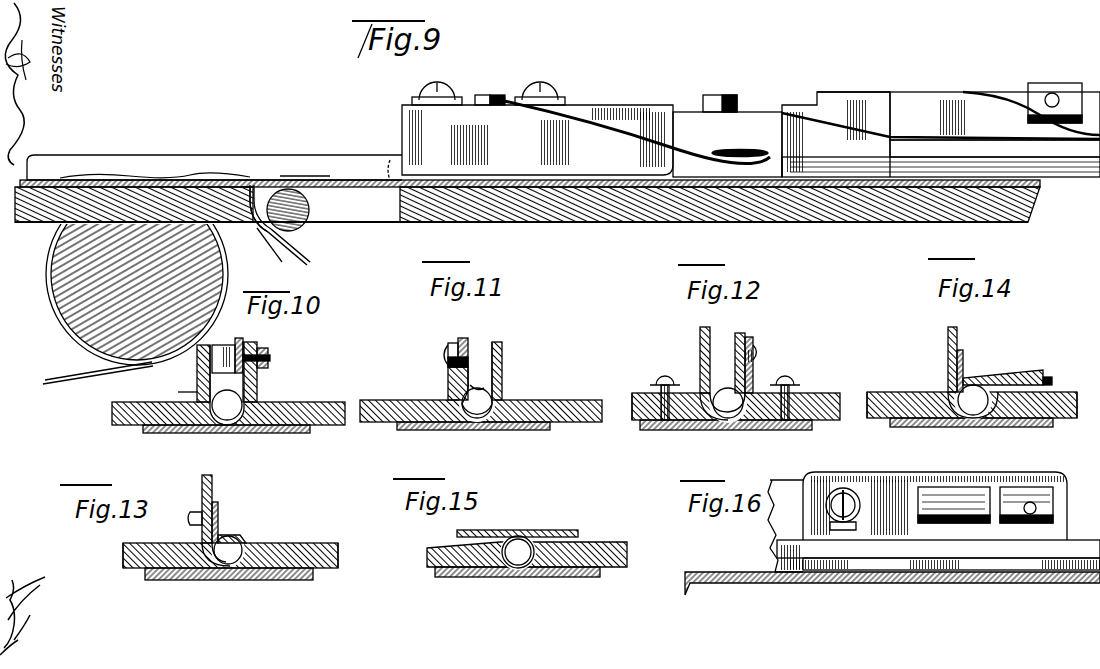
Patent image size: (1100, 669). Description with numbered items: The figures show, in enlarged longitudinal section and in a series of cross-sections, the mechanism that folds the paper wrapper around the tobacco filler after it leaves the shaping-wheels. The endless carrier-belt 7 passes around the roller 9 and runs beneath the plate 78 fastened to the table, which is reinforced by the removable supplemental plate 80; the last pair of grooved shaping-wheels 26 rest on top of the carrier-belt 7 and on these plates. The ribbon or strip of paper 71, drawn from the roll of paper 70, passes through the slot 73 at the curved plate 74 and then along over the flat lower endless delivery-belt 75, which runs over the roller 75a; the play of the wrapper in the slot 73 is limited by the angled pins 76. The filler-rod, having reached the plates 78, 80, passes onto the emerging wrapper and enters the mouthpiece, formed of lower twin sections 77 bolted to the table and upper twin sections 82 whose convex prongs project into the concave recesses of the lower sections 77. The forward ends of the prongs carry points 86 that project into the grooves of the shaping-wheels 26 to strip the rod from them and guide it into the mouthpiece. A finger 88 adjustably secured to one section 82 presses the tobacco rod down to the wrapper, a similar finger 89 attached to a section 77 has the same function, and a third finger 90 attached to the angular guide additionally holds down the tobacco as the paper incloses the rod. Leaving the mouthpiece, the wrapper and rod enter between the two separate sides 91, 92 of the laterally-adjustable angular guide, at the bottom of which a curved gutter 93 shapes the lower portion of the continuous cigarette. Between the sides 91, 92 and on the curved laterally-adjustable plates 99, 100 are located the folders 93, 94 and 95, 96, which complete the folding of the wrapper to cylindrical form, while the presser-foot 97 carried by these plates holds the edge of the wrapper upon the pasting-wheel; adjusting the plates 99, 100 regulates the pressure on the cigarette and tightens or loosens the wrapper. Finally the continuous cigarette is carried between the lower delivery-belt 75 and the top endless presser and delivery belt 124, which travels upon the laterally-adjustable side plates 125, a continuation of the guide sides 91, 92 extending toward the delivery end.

In FIG. 9, the carrier-belt 7 is at (43, 383).
In FIG. 9, the roller 9 is at (127, 274).
In FIG. 9, the shaping-wheels 26 is at (214, 155).
In FIG. 9, the roll of paper 70 is at (527, 217).
In FIG. 9, the ribbon or strip of paper 71 is at (277, 256).
In FIG. 9, the slot 73 is at (251, 192).
In FIG. 9, the curved plate 74 is at (300, 172).
In FIG. 9, the lower endless delivery-belt 75 is at (301, 252).
In FIG. 10, the lower endless delivery-belt 75 is at (306, 433).
In FIG. 11, the lower endless delivery-belt 75 is at (425, 432).
In FIG. 12, the lower endless delivery-belt 75 is at (668, 432).
In FIG. 14, the lower endless delivery-belt 75 is at (898, 430).
In FIG. 13, the lower endless delivery-belt 75 is at (278, 578).
In FIG. 15, the lower endless delivery-belt 75 is at (565, 578).
In FIG. 16, the lower endless delivery-belt 75 is at (752, 570).
In FIG. 9, the roller 75a is at (308, 222).
In FIG. 9, the pins 76 is at (254, 222).
In FIG. 9, the lower twin sections 77 is at (750, 120).
In FIG. 9, the plate 78 is at (245, 189).
In FIG. 9, the supplemental plate 80 is at (155, 171).
In FIG. 9, the upper twin sections 82 is at (530, 131).
In FIG. 9, the points 86 is at (242, 162).
In FIG. 9, the finger 88 is at (620, 117).
In FIG. 9, the finger 89 is at (836, 134).
In FIG. 10, the finger 89 is at (197, 356).
In FIG. 9, the finger 90 is at (941, 124).
In FIG. 11, the finger 90 is at (480, 386).
In FIG. 9, the side of angular guide 91 is at (832, 95).
In FIG. 10, the side of angular guide 91 is at (171, 385).
In FIG. 11, the side of angular guide 91 is at (448, 383).
In FIG. 12, the side of angular guide 91 is at (635, 418).
In FIG. 14, the side of angular guide 91 is at (870, 416).
In FIG. 13, the side of angular guide 91 is at (128, 572).
In FIG. 10, the side of angular guide 92 is at (258, 392).
In FIG. 11, the side of angular guide 92 is at (503, 382).
In FIG. 12, the side of angular guide 92 is at (815, 402).
In FIG. 14, the side of angular guide 92 is at (1052, 418).
In FIG. 13, the side of angular guide 92 is at (330, 572).
In FIG. 10, the gutter 93 is at (243, 342).
In FIG. 9, the folder 94 is at (1040, 88).
In FIG. 11, the folder 94 is at (468, 346).
In FIG. 12, the folder 95 is at (754, 343).
In FIG. 14, the folder 96 is at (1030, 372).
In FIG. 13, the folder 96 is at (224, 538).
In FIG. 16, the folder 96 is at (977, 490).
In FIG. 14, the presser-foot 97 is at (965, 357).
In FIG. 16, the presser-foot 97 is at (1050, 502).
In FIG. 12, the laterally-adjustable plate 99 is at (700, 340).
In FIG. 14, the laterally-adjustable plate 99 is at (948, 338).
In FIG. 13, the laterally-adjustable plate 99 is at (202, 496).
In FIG. 16, the laterally-adjustable plate 99 is at (957, 477).
In FIG. 12, the laterally-adjustable plate 100 is at (755, 384).
In FIG. 14, the laterally-adjustable plate 100 is at (1052, 385).
In FIG. 16, the laterally-adjustable plate 100 is at (877, 495).
In FIG. 15, the top endless presser and delivery belt 124 is at (523, 540).
In FIG. 15, the laterally-adjustable side plates 125 is at (432, 545).